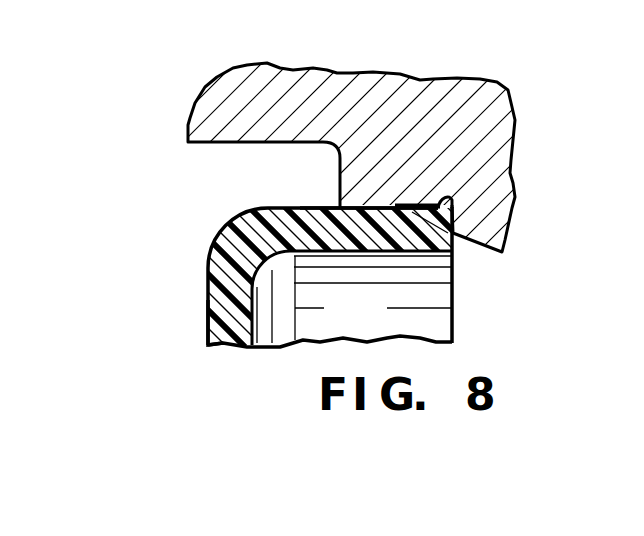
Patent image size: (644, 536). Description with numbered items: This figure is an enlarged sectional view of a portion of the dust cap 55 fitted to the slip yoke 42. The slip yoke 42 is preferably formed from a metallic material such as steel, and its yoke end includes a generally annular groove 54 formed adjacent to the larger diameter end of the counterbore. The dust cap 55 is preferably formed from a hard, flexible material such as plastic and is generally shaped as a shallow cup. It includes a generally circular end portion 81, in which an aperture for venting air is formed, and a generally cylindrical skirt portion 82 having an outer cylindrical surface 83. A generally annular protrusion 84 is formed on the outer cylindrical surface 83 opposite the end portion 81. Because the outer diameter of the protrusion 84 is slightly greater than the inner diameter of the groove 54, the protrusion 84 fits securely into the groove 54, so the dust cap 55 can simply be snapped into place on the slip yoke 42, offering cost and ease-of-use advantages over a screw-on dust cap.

The slip yoke 42 is at (517, 111).
The annular groove 54 is at (455, 196).
The dust cap 55 is at (192, 289).
The end portion 81 is at (215, 325).
The skirt portion 82 is at (320, 238).
The outer cylindrical surface 83 is at (327, 207).
The annular protrusion 84 is at (452, 233).